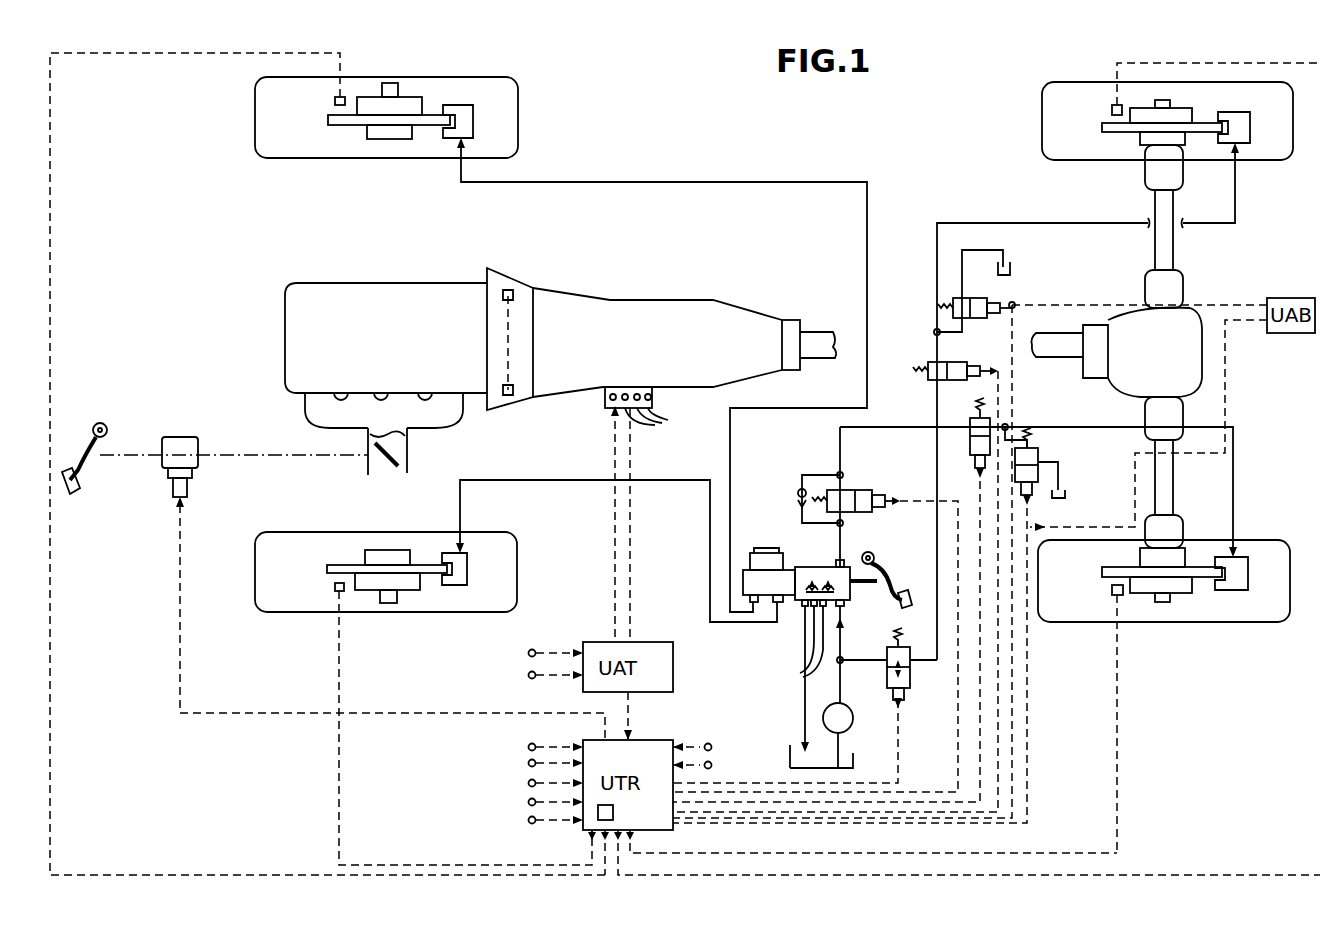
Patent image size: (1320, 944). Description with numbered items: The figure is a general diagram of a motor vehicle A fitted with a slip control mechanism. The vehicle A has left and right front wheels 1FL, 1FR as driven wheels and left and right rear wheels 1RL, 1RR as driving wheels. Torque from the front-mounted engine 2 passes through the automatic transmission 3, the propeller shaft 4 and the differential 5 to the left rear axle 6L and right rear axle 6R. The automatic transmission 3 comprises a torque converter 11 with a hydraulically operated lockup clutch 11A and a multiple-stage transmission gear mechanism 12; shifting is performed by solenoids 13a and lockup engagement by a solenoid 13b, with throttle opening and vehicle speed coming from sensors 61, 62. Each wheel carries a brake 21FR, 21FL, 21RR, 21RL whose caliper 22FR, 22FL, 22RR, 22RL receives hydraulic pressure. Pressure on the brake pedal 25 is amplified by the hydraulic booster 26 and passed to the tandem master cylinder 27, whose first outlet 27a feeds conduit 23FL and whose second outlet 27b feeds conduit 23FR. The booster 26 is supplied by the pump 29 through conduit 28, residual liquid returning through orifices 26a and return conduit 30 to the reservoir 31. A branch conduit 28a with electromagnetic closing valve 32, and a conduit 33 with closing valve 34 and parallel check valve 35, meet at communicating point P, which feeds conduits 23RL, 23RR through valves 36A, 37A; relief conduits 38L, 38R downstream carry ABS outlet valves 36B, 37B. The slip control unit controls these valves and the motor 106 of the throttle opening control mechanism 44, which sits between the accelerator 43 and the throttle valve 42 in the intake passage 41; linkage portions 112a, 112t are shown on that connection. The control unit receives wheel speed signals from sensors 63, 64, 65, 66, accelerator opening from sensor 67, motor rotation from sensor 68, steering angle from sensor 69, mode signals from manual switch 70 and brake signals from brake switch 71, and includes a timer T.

The motor vehicle A is at (640, 140).
The right front wheel 1FR is at (300, 158).
The left front wheel 1FL is at (270, 612).
The right rear wheel 1RR is at (1042, 120).
The left rear wheel 1RL is at (1258, 622).
The engine 2 is at (383, 288).
The automatic transmission 3 is at (633, 298).
The propeller shaft 4 is at (815, 335).
The differential 5 is at (1190, 362).
The right rear axle 6R is at (1155, 258).
The left rear axle 6L is at (1173, 490).
The torque converter 11 is at (508, 292).
The lockup clutch 11A is at (515, 398).
The multiple-stage transmission gear mechanism 12 is at (686, 303).
The solenoids 13a is at (651, 412).
The solenoid 13b is at (605, 400).
The front right brake 21FR is at (437, 99).
The front left brake 21FL is at (430, 596).
The rear right brake 21RR is at (1212, 100).
The rear left brake 21RL is at (1212, 595).
The caliper 22FR is at (475, 118).
The caliper 22FL is at (468, 565).
The caliper 22RR is at (1250, 128).
The caliper 22RL is at (1250, 568).
The conduit 23FR is at (682, 182).
The conduit 23FL is at (512, 480).
The conduit 23RR is at (995, 235).
The conduit 23RL is at (1235, 450).
The brake pedal 25 is at (905, 590).
The hydraulic booster 26 is at (818, 567).
The orifices 26a is at (800, 673).
The tandem type master cylinder 27 is at (763, 570).
The first outlet 27a is at (772, 625).
The second outlet 27b is at (740, 600).
The conduit 28 is at (855, 695).
The branch conduit 28a is at (900, 700).
The pump 29 is at (842, 740).
The return conduit 30 is at (805, 716).
The reservoir 31 is at (790, 760).
The electromagnetic closing valve 32 is at (887, 655).
The conduit 33 is at (892, 480).
The electromagnetic closing valve 34 is at (870, 493).
The check valve 35 is at (790, 490).
The electromagnetic closing valve 36A is at (998, 420).
The electromagnetic closing valve 36B is at (1040, 455).
The electromagnetic closing valve 37A is at (948, 362).
The electromagnetic closing valve 37B is at (948, 300).
The relief conduit 38R is at (948, 250).
The relief conduit 38L is at (1060, 482).
The intake passage 41 is at (368, 470).
The throttle valve 42 is at (408, 456).
The accelerator 43 is at (78, 495).
The throttle opening control mechanism 44 is at (186, 437).
The sensor 61 is at (529, 675).
The sensor 62 is at (529, 653).
The sensor 63 is at (335, 101).
The sensor 64 is at (335, 587).
The sensor 65 is at (1112, 110).
The sensor 66 is at (1112, 598).
The sensor 67 is at (529, 747).
The sensor 68 is at (529, 763).
The sensor 69 is at (529, 783).
The manual switch 70 is at (706, 744).
The brake switch 71 is at (712, 762).
The motor 106 is at (188, 497).
The accelerator linkage 112a is at (115, 458).
The throttle linkage 112t is at (258, 458).
The communicating point P is at (932, 425).
The timer T is at (598, 815).